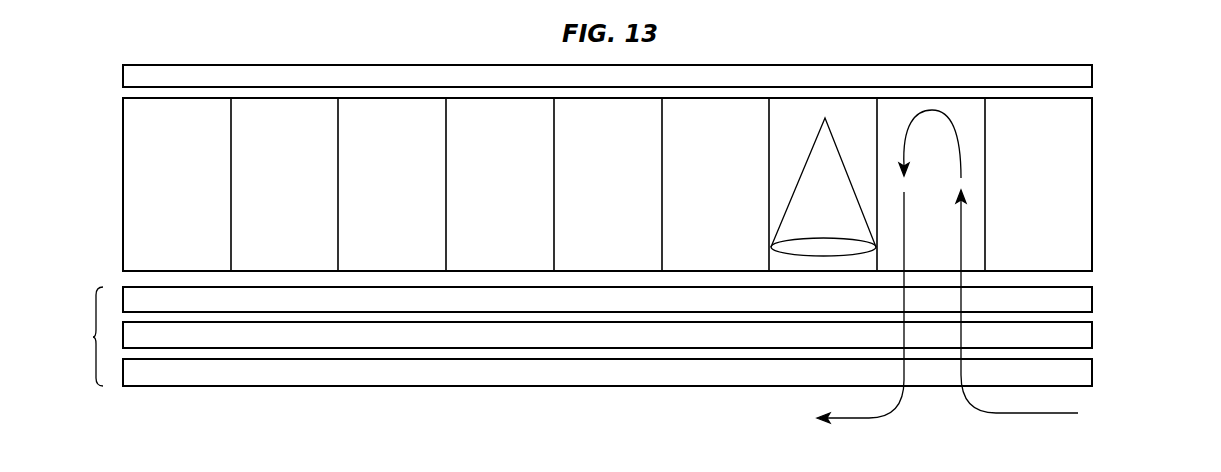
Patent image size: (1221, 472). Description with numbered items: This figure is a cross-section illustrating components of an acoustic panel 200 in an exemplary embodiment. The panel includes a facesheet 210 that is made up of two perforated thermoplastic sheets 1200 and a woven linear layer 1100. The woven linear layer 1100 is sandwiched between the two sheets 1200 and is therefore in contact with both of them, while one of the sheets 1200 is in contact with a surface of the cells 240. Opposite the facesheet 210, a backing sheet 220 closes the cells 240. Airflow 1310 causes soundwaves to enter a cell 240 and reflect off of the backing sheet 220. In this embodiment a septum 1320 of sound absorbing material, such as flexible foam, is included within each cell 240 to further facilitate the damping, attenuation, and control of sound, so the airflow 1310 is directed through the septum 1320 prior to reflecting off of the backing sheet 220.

The acoustic panel 200 is at (1128, 167).
The facesheet 210 is at (605, 335).
The backing sheet 220 is at (1087, 73).
The cell 240 is at (968, 145).
The woven linear layer 1100 is at (1085, 332).
The perforated thermoplastic sheet 1200 is at (1080, 300).
The airflow 1310 is at (953, 130).
The septum 1320 is at (821, 154).